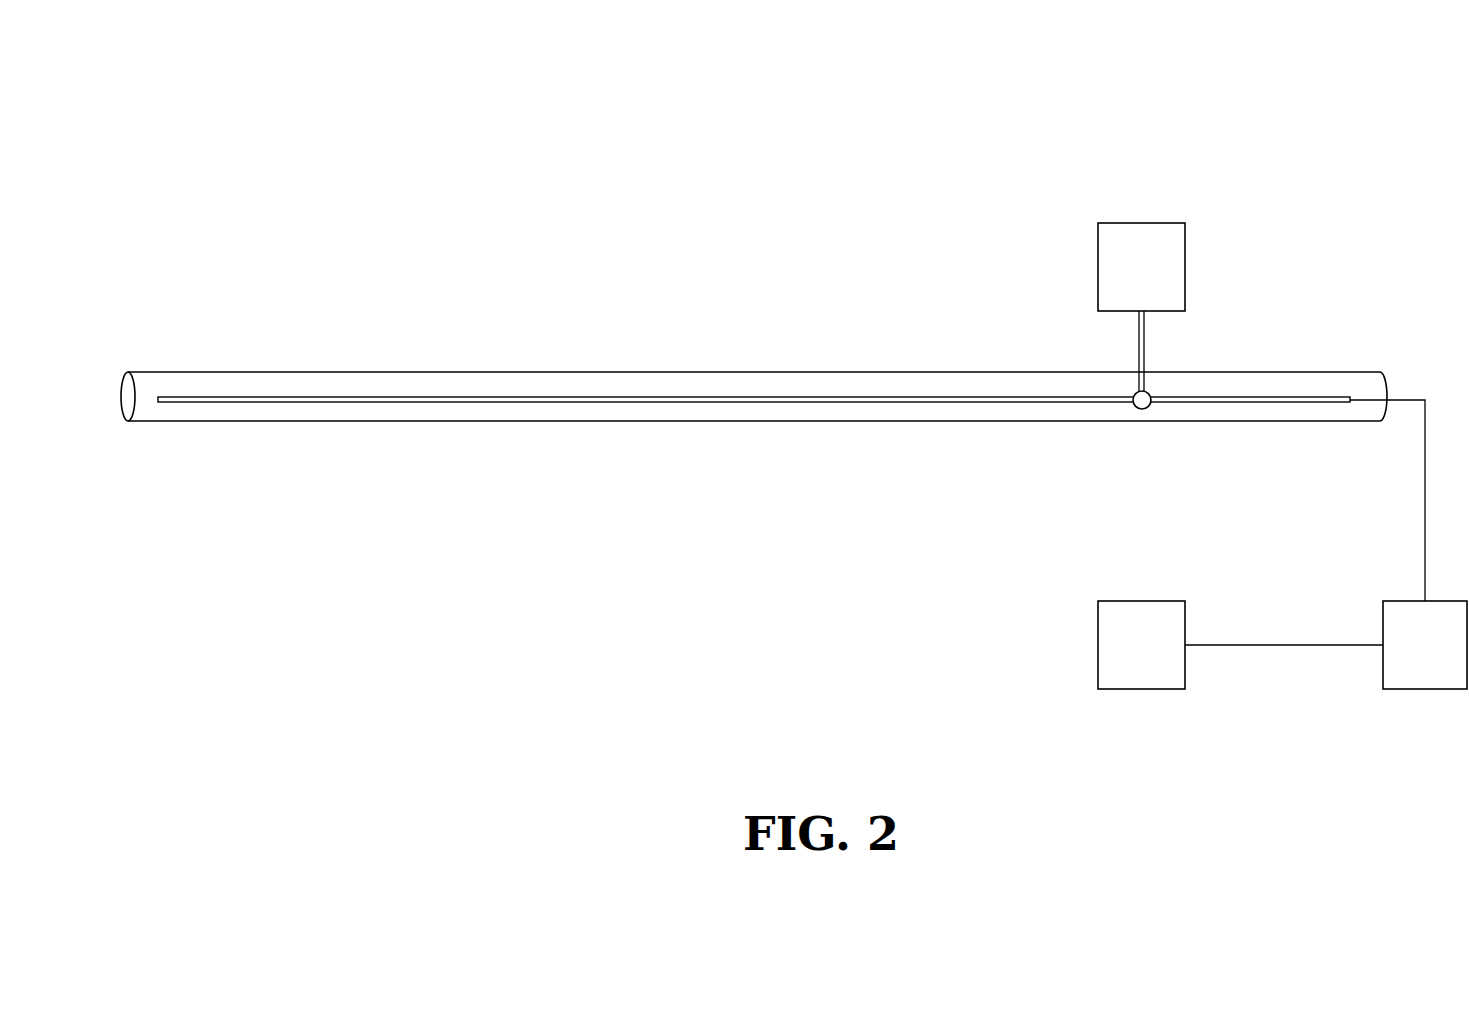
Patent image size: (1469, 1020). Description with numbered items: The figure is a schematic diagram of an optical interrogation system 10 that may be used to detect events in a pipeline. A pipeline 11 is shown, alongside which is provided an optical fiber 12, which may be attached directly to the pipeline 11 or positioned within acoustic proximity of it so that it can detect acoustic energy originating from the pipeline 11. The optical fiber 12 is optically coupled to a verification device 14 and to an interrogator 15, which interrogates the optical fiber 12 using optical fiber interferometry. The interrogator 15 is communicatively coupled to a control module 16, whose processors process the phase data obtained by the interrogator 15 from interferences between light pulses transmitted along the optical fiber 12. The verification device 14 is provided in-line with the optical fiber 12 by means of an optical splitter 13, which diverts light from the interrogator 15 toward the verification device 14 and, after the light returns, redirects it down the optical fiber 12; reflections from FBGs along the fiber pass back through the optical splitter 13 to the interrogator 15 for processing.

The optical interrogation system 10 is at (1326, 118).
The pipeline 11 is at (124, 396).
The optical fiber 12 is at (167, 397).
The optical splitter 13 is at (1148, 392).
The verification device 14 is at (1156, 283).
The interrogator 15 is at (1440, 662).
The control module 16 is at (1156, 662).